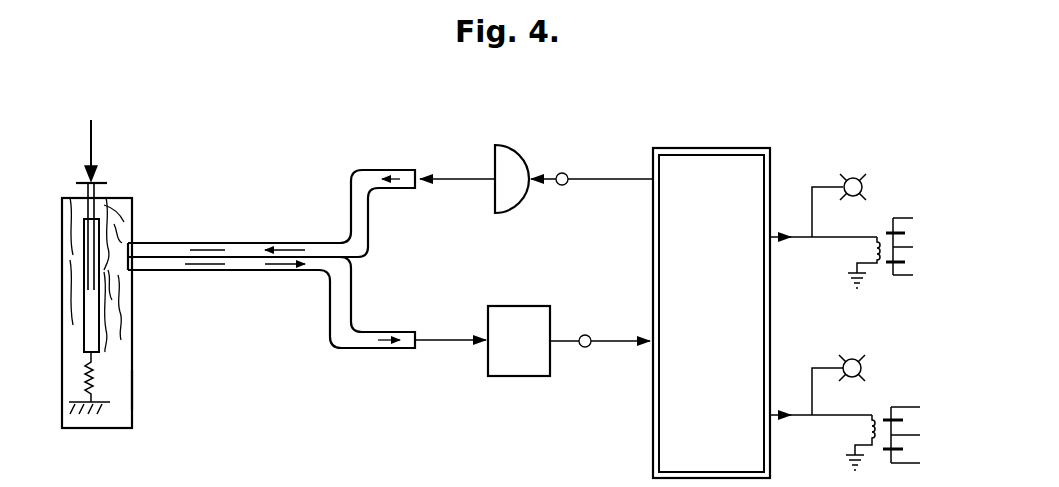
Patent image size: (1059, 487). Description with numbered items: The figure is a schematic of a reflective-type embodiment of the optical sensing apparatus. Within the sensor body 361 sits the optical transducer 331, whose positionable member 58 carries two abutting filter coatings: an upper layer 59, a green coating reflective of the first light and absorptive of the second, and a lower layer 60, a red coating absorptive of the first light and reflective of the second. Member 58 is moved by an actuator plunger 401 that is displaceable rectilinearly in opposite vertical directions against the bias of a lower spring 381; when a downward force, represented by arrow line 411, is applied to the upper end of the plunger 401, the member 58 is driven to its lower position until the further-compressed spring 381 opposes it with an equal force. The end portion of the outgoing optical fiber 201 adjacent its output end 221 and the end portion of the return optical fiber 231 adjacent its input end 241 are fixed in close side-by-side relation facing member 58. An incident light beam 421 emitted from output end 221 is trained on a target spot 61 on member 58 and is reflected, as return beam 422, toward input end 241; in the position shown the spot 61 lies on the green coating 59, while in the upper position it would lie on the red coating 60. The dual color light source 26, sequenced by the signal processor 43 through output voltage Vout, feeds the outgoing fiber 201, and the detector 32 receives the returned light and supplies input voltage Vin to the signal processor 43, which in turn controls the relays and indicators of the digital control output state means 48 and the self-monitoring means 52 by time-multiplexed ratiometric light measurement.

The arrow line 411 is at (88, 160).
The member 58 is at (73, 222).
The plunger 401 is at (100, 205).
The layer 59 is at (113, 235).
The incident light beam 421 is at (122, 216).
The output end 221 is at (120, 238).
The outgoing optical fiber 201 is at (271, 213).
The return optical fiber 231 is at (271, 302).
The target spot 61 is at (123, 258).
The input end 241 is at (118, 280).
The return light beam 422 is at (118, 300).
The layer 60 is at (105, 338).
The optical transducer 331 is at (140, 390).
The spring 381 is at (104, 392).
The sensor body 361 is at (83, 429).
The light source 26 is at (536, 200).
The detector 32 is at (521, 356).
The signal processor 43 is at (711, 313).
The digital control output state means 48 is at (884, 196).
The self-monitoring means 52 is at (882, 394).